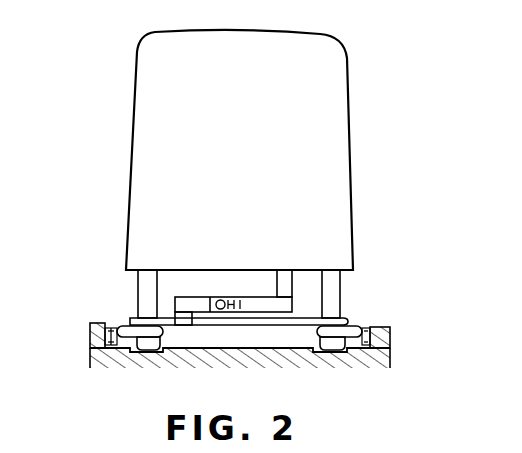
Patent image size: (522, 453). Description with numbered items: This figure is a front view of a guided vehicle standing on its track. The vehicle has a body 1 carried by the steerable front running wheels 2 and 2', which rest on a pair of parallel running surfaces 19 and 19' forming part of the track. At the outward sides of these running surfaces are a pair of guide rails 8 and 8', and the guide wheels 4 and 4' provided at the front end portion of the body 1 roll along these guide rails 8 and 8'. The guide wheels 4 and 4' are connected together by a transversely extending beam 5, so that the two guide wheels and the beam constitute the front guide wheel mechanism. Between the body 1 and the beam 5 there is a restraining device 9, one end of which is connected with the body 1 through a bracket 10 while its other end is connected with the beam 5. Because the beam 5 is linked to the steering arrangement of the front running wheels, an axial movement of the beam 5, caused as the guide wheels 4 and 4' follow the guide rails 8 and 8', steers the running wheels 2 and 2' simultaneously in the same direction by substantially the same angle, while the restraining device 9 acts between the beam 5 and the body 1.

The body 1 is at (348, 140).
The front running wheel 2 is at (346, 294).
The front running wheel 2' is at (128, 293).
The guide wheel 4 is at (352, 319).
The guide wheel 4' is at (120, 319).
The beam 5 is at (165, 318).
The guide rail 8 is at (390, 344).
The guide rail 8' is at (87, 342).
The restraining device 9 is at (219, 297).
The bracket 10 is at (285, 281).
The running surface 19 is at (347, 367).
The running surface 19' is at (138, 366).